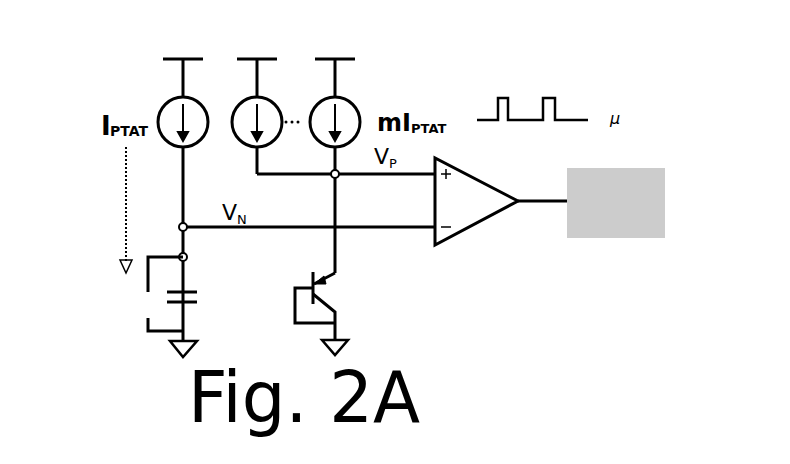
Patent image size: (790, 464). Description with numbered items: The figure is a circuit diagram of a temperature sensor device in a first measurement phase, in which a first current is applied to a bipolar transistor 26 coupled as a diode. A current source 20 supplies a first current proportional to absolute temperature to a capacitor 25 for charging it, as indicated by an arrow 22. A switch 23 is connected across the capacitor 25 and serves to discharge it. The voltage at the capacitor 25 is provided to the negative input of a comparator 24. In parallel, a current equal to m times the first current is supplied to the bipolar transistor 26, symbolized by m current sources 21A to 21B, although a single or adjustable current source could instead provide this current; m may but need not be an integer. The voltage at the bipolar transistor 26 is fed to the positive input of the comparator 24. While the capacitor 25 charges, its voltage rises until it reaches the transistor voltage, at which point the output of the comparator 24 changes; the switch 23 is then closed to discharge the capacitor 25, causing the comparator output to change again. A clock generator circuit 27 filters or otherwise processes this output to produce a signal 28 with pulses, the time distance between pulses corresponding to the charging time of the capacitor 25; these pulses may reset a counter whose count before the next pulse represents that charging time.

The current source 20 is at (167, 110).
The current source 21A is at (272, 98).
The current source 21B is at (355, 110).
The arrow 22 is at (132, 193).
The switch 23 is at (148, 292).
The comparator 24 is at (473, 229).
The capacitor 25 is at (202, 299).
The bipolar transistor 26 is at (326, 295).
The clock generator circuit 27 is at (637, 170).
The signal 28 is at (555, 98).